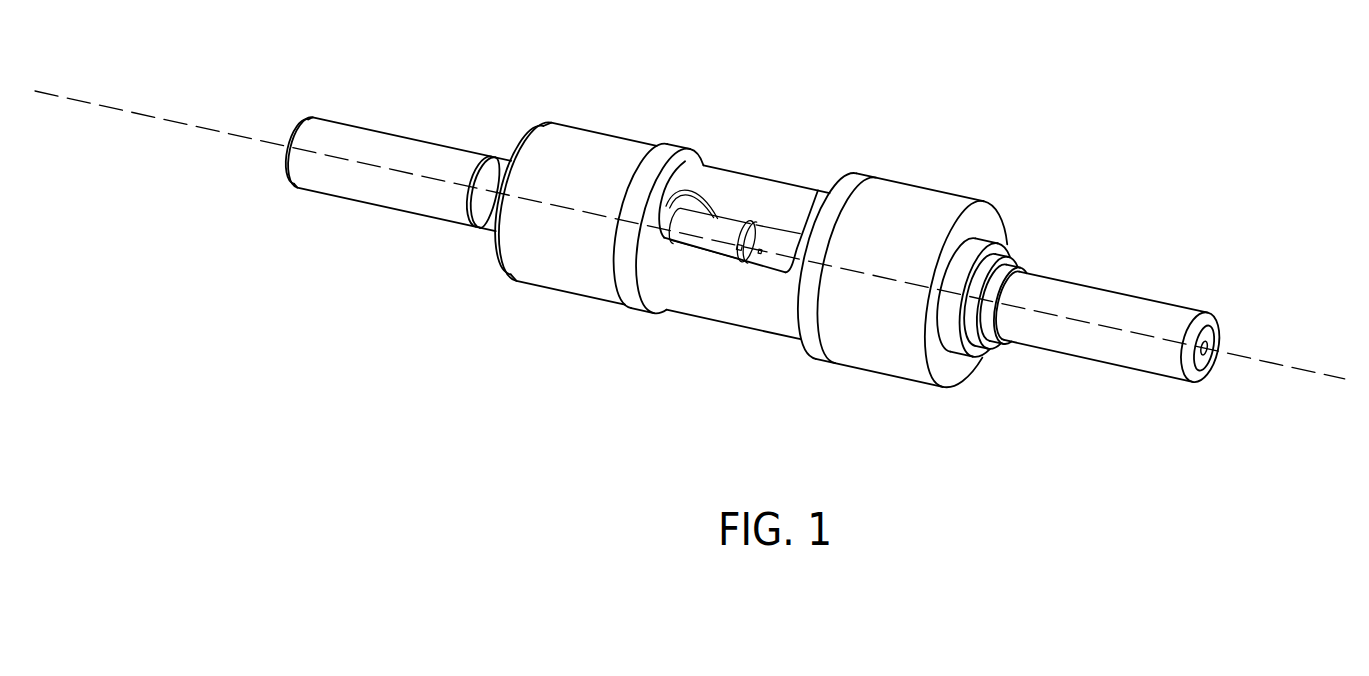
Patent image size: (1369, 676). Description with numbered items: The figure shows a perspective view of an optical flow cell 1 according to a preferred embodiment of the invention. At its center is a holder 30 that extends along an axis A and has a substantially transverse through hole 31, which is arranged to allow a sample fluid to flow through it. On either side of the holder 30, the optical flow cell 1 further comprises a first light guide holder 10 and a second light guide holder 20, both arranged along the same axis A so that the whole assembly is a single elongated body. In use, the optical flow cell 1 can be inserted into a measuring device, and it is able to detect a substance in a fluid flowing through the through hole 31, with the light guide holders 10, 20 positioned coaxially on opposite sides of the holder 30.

The optical flow cell 1 is at (701, 249).
The first light guide holder 10 is at (1098, 298).
The second light guide holder 20 is at (372, 193).
The holder 30 is at (870, 360).
The through hole 31 is at (749, 190).